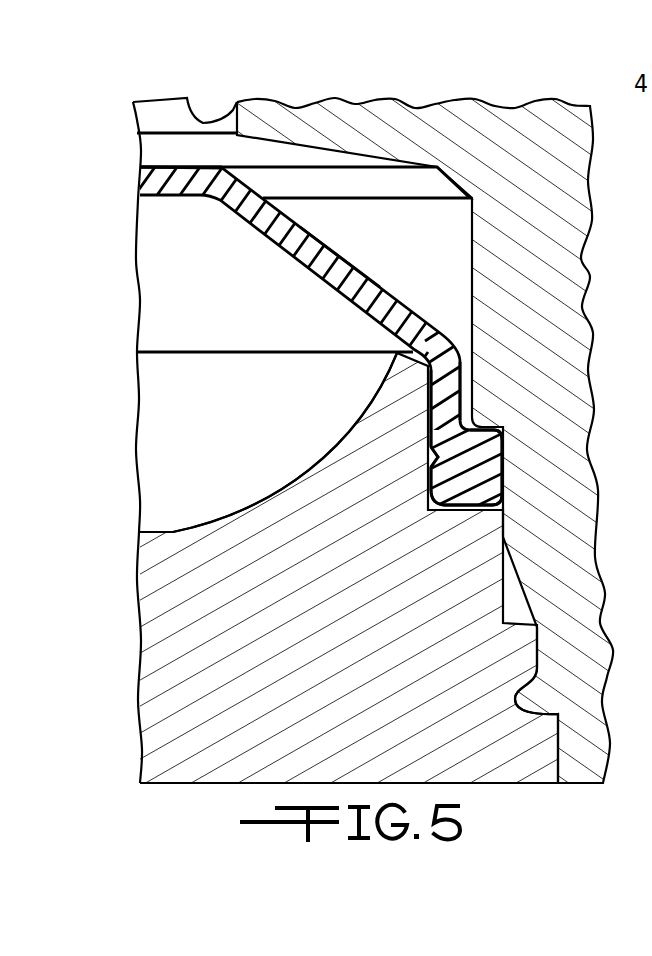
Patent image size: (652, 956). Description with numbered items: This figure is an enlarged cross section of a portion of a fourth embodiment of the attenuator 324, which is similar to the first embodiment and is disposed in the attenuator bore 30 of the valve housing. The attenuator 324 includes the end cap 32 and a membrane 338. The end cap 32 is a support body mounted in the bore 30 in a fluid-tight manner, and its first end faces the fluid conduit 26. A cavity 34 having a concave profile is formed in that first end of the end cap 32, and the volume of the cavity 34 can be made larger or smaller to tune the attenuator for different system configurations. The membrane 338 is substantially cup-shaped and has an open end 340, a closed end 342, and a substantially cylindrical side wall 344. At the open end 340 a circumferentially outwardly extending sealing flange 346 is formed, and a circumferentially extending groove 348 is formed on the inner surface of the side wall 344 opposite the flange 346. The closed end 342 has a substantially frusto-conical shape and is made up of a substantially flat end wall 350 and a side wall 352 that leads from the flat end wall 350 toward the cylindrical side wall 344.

The attenuator 324 is at (95, 108).
The end wall 350 is at (152, 170).
The fluid conduit 26 is at (187, 103).
The membrane 338 is at (294, 222).
The side wall 352 is at (327, 250).
The closed end 342 is at (131, 167).
The attenuator bore 30 is at (472, 268).
The side wall 344 is at (450, 388).
The sealing flange 346 is at (478, 463).
The groove 348 is at (431, 463).
The open end 340 is at (430, 510).
The cavity 34 is at (173, 532).
The end cap 32 is at (145, 712).